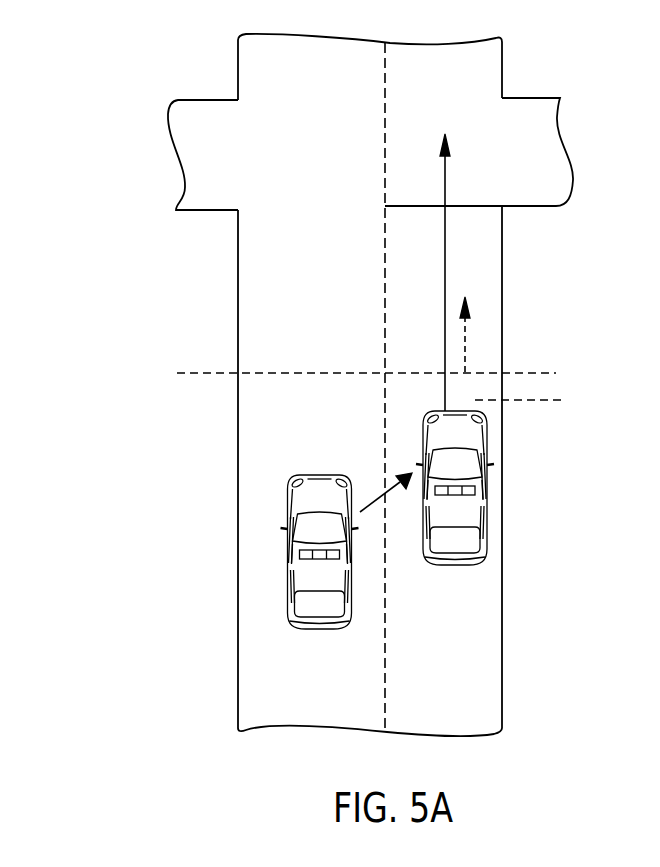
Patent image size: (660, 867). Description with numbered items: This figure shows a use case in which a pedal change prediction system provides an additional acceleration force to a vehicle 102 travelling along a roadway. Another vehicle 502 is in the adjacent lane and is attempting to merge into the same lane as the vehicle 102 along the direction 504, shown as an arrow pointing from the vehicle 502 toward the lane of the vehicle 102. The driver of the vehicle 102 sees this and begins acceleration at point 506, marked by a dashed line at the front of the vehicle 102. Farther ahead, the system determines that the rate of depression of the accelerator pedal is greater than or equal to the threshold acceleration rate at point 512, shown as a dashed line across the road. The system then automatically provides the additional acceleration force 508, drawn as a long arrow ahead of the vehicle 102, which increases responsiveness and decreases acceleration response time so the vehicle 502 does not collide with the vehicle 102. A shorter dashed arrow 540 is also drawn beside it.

The vehicle 102 is at (487, 500).
The vehicle 502 is at (287, 519).
The direction 504 is at (374, 498).
The point 506 is at (562, 400).
The additional acceleration force 508 is at (447, 178).
The point 512 is at (556, 370).
The predicted path arrow 540 is at (467, 347).